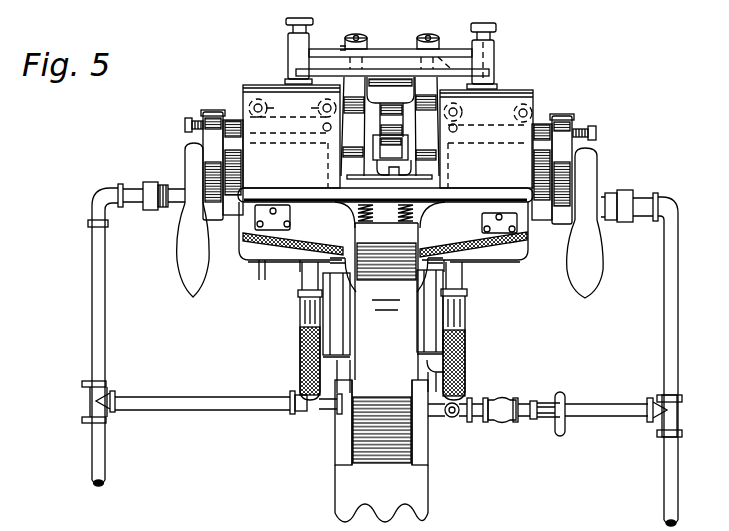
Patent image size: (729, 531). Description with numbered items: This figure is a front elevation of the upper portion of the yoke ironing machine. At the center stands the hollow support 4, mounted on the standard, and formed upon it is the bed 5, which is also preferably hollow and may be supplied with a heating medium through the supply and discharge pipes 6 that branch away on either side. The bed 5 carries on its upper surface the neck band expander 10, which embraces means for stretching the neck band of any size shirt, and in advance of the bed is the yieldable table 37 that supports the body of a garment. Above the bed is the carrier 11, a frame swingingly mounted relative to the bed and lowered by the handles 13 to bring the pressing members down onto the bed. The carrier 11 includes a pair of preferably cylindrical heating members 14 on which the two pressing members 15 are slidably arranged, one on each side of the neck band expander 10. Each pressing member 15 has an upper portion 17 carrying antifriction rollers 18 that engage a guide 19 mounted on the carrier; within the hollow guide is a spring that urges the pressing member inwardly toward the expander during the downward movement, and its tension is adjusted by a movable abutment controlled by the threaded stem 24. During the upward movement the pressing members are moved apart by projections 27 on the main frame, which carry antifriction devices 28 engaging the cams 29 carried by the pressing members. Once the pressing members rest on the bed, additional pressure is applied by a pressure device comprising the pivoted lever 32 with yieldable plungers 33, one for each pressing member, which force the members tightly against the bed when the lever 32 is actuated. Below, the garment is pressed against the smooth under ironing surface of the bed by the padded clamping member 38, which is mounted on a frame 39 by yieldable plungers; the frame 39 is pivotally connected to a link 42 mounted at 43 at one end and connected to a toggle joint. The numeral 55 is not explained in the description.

The hollow support 4 is at (353, 428).
The bed 5 is at (472, 247).
The supply and discharge pipes 6 is at (463, 419).
The neck band expander 10 is at (363, 183).
The carrier 11 is at (483, 23).
The handles 13 is at (194, 278).
The heating members 14 is at (236, 166).
The pressing member 15 is at (385, 184).
The upper portion 17 is at (253, 86).
The antifriction rollers 18 is at (567, 105).
The guide 19 is at (574, 119).
The threaded stem 24 is at (189, 118).
The projections 27 is at (363, 48).
The antifriction devices 28 is at (398, 49).
The cams 29 is at (345, 47).
The pivoted lever 32 is at (296, 50).
The yieldable plungers 33 is at (496, 90).
The yieldable table 37 is at (318, 198).
The padded clamping member 38 is at (495, 265).
The frame 39 is at (300, 303).
The link 42 is at (300, 340).
The link mounting 43 is at (466, 375).
The box 55 is at (398, 161).